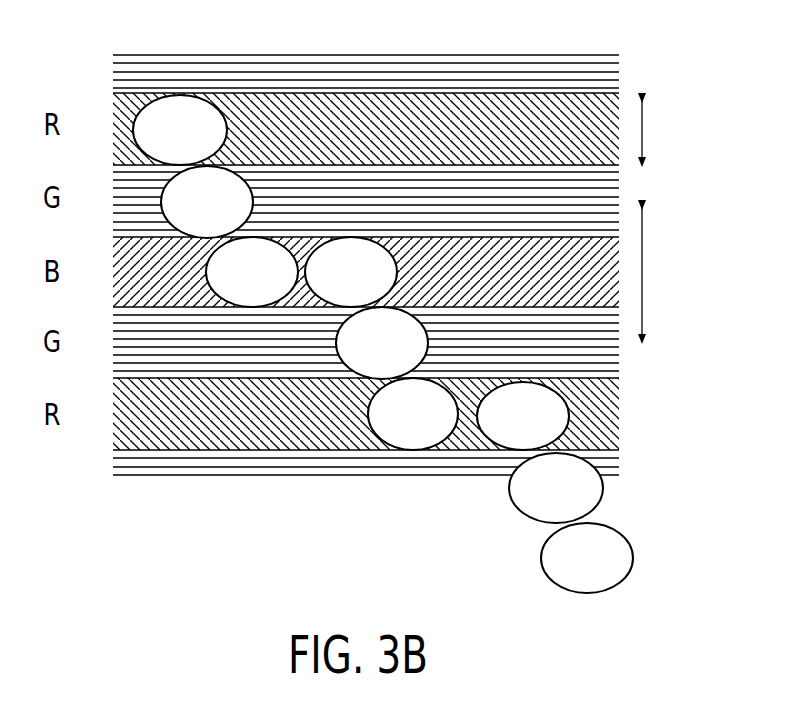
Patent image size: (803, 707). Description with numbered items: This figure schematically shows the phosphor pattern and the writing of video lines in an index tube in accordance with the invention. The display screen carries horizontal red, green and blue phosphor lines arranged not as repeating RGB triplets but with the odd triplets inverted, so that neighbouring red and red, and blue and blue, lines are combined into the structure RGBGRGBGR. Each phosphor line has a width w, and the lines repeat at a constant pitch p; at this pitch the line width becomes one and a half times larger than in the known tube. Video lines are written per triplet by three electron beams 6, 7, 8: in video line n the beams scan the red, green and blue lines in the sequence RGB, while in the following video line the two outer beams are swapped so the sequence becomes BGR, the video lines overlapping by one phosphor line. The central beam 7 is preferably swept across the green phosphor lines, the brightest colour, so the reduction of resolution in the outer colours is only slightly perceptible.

The electron beam 6 is at (205, 122).
The electron beam 7 is at (222, 192).
The electron beam 8 is at (260, 262).
The video line n is at (227, 272).
The width of the phosphor lines w is at (654, 130).
The pitch p is at (654, 272).